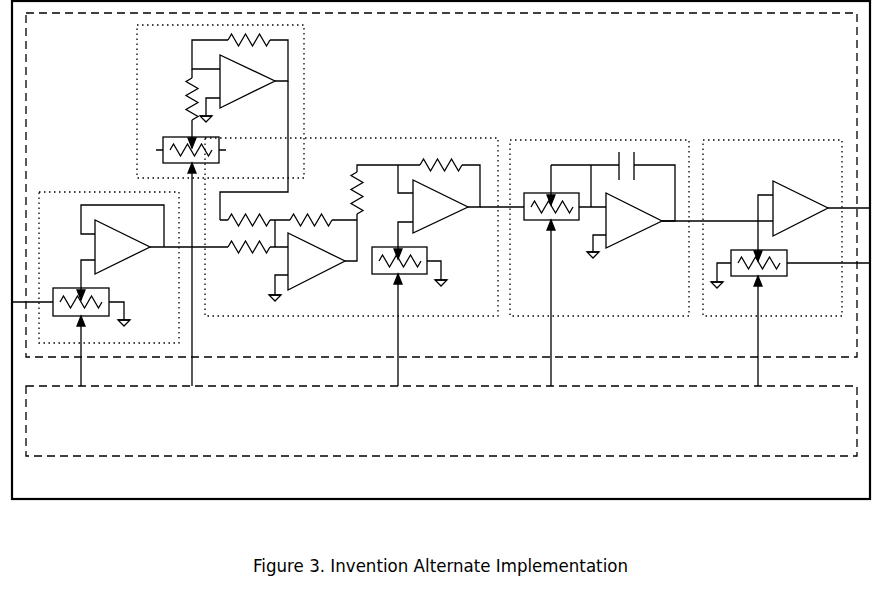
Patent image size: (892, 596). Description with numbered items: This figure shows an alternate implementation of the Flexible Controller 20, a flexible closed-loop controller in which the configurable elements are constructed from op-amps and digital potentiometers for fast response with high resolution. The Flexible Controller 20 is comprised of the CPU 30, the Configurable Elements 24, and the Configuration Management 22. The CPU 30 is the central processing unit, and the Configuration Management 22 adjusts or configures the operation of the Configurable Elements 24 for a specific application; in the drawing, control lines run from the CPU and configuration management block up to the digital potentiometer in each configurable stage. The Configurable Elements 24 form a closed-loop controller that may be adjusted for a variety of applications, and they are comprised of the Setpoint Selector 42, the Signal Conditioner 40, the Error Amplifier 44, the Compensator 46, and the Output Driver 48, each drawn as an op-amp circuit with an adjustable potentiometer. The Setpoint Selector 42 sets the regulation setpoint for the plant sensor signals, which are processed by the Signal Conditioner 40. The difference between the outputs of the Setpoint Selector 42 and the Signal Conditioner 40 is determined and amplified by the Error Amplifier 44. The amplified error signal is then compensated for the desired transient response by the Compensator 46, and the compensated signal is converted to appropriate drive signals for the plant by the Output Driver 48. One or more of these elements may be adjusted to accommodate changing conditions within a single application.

The flexible controller 20 is at (441, 250).
The configuration management 22 is at (441, 421).
The configurable elements 24 is at (441, 185).
The CPU 30 is at (419, 288).
The signal conditioner 40 is at (116, 267).
The setpoint selector 42 is at (220, 122).
The error amplifier 44 is at (364, 227).
The compensator 46 is at (641, 228).
The output driver 48 is at (786, 228).